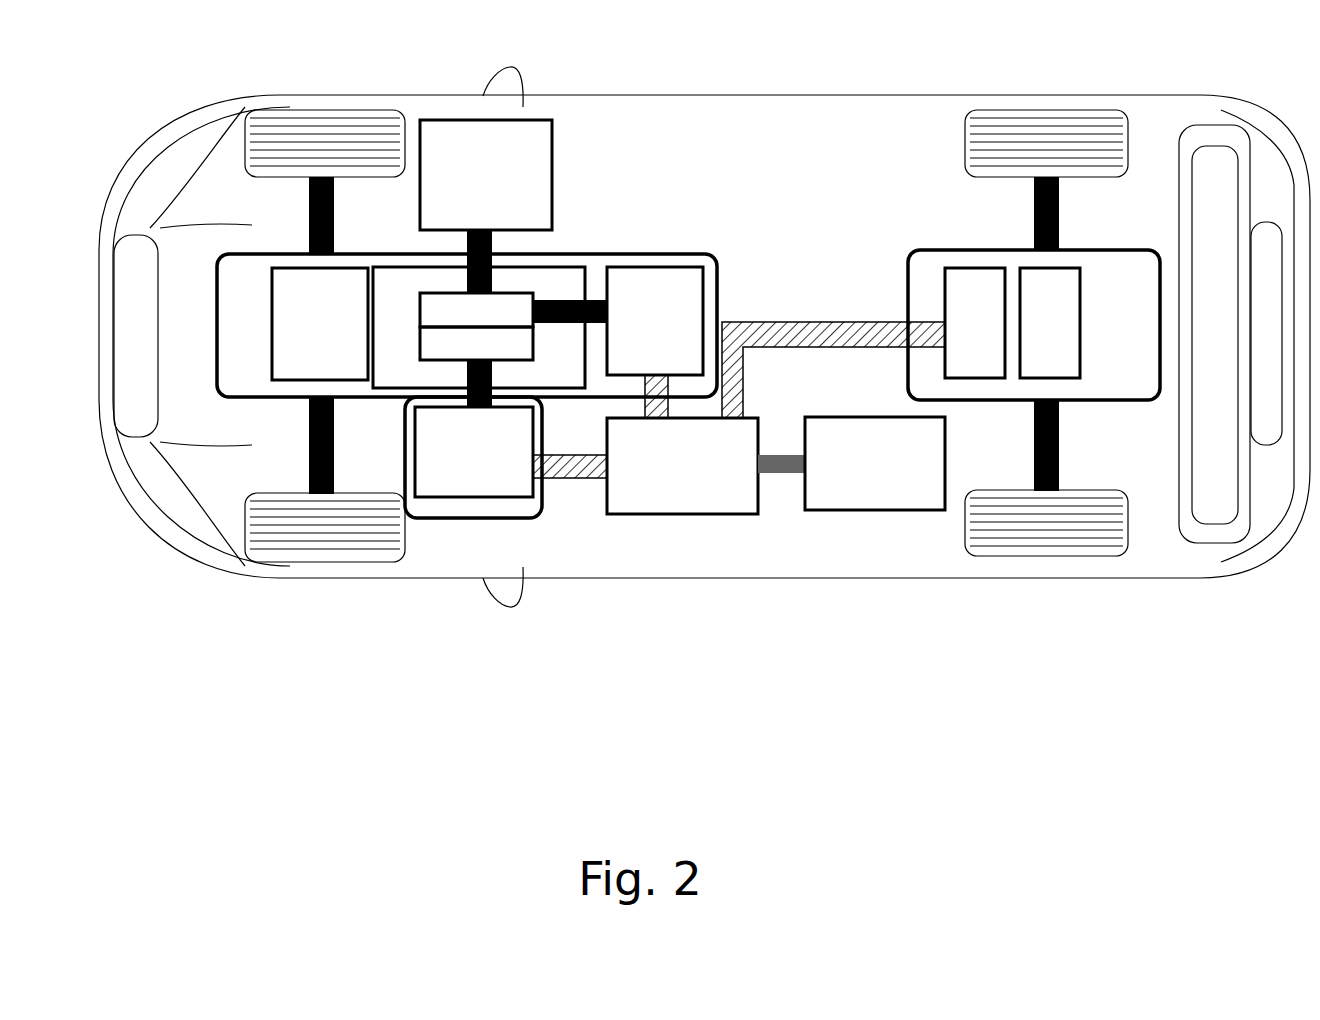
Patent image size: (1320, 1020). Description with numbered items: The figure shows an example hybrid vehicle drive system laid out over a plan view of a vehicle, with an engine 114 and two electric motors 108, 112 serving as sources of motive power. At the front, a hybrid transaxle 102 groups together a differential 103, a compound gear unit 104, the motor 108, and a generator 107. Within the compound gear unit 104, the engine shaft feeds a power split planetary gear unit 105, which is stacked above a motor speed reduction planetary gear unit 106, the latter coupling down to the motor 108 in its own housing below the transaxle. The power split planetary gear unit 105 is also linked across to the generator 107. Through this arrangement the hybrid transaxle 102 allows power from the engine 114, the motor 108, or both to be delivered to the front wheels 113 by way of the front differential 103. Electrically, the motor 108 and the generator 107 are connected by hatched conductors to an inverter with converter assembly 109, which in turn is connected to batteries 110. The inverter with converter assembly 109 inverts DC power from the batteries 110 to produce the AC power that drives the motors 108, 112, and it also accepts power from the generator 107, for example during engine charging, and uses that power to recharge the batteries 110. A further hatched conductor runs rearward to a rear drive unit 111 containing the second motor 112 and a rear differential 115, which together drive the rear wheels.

The hybrid transaxle 102 is at (226, 291).
The differential 103 is at (300, 335).
The compound gear unit 104 is at (538, 382).
The power split planetary gear unit 105 is at (456, 324).
The motor speed reduction planetary gear unit 106 is at (456, 357).
The generator 107 is at (635, 332).
The motor 108 is at (454, 479).
The inverter with converter assembly 109 is at (663, 477).
The batteries 110 is at (855, 474).
The rear drive unit 111 is at (1093, 377).
The electric motor 112 is at (955, 337).
The front wheels 113 is at (325, 333).
The engine 114 is at (466, 201).
The rear differential 115 is at (1030, 337).